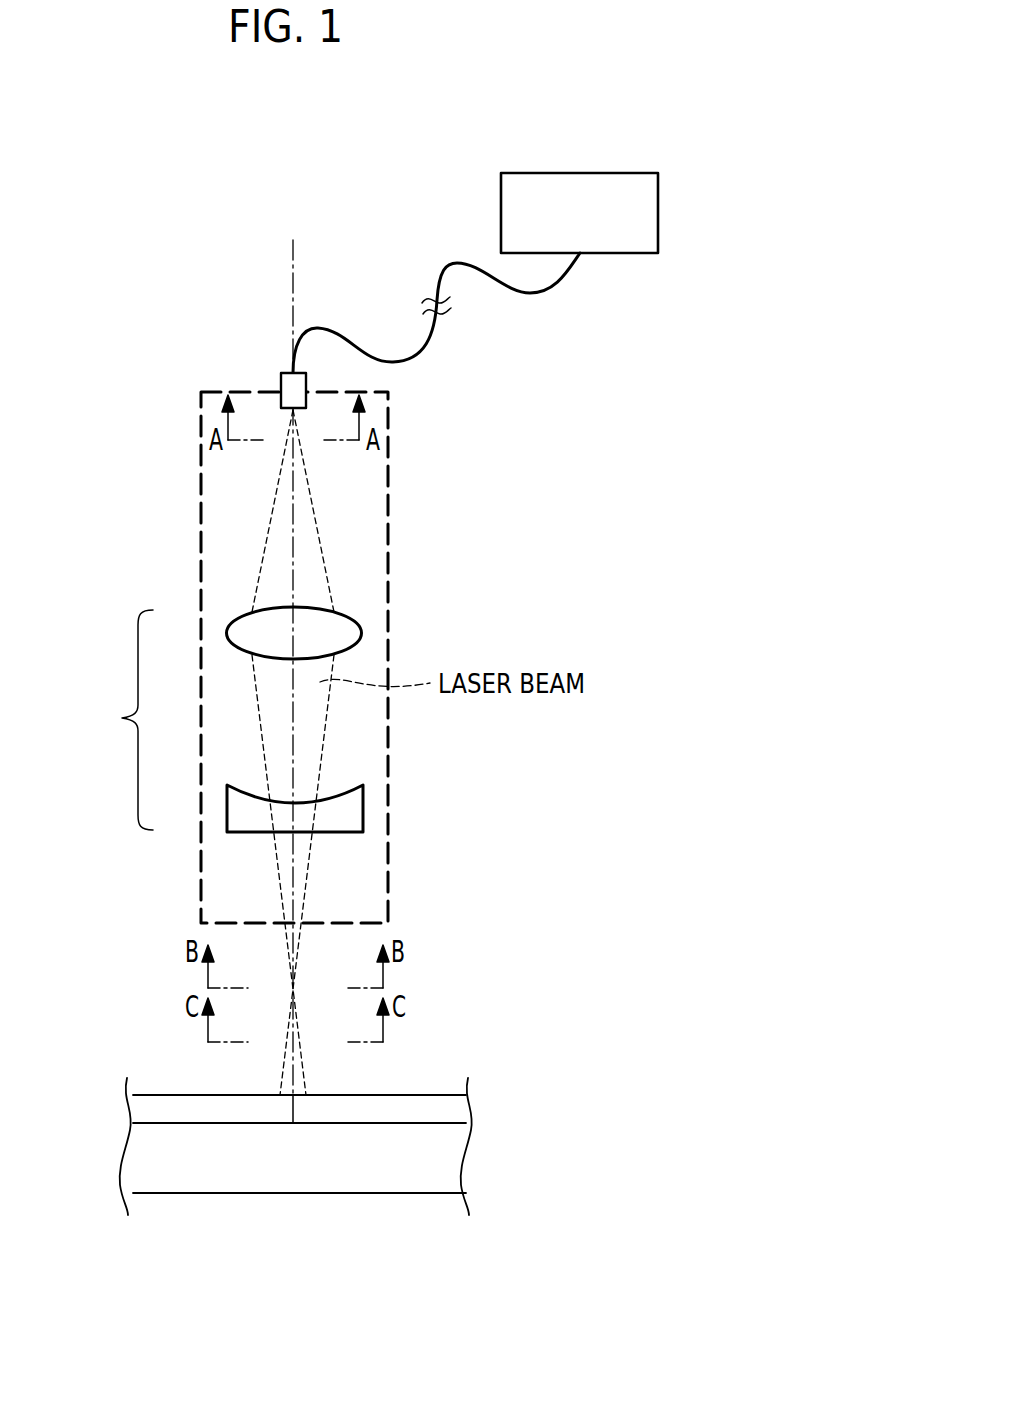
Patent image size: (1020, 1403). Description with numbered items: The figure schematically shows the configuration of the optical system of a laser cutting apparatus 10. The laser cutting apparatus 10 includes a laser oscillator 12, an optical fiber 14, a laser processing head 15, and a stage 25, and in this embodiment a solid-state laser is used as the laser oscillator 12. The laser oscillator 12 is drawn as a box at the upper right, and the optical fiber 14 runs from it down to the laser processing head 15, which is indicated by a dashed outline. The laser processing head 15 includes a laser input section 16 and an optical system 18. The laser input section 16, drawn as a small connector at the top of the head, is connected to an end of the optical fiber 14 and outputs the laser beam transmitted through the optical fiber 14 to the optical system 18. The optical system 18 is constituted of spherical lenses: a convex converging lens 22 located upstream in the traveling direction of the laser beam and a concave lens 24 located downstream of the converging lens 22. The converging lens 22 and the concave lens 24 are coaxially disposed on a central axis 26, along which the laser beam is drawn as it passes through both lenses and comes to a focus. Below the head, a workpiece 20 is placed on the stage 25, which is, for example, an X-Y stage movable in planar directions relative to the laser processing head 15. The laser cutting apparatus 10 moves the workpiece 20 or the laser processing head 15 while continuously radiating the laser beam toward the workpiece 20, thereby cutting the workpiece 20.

The laser cutting apparatus 10 is at (340, 185).
The laser oscillator 12 is at (580, 173).
The optical fiber 14 is at (433, 333).
The laser processing head 15 is at (200, 535).
The laser input section 16 is at (281, 385).
The optical system 18 is at (121, 720).
The workpiece 20 is at (441, 1108).
The converging lens 22 is at (227, 633).
The concave lens 24 is at (227, 812).
The stage 25 is at (387, 1178).
The central axis 26 is at (296, 545).